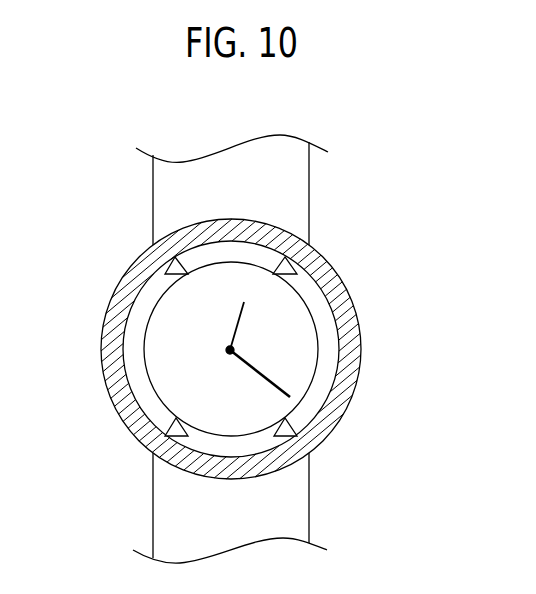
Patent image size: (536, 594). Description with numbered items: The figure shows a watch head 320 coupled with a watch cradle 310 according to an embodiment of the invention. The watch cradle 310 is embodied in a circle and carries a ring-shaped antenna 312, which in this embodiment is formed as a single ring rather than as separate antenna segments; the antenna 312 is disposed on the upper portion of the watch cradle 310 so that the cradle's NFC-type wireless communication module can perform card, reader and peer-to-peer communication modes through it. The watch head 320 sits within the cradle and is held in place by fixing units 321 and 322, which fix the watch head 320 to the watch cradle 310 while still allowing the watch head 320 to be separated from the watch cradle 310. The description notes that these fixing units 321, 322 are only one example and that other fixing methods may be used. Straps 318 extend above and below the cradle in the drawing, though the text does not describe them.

The watch cradle 310 is at (360, 380).
The ring-shaped antenna 312 is at (353, 348).
The watch band 318 is at (302, 192).
The watch head 320 is at (305, 315).
The fixing unit 321 is at (173, 421).
The fixing unit 322 is at (172, 258).